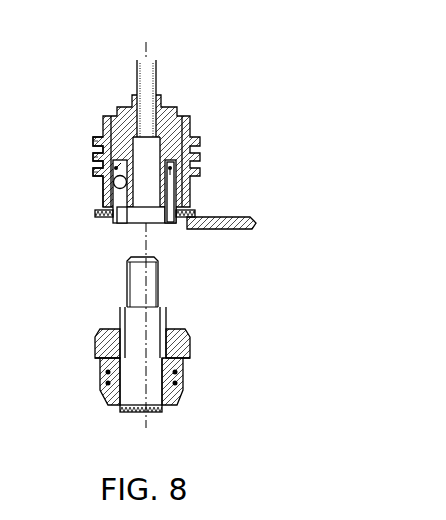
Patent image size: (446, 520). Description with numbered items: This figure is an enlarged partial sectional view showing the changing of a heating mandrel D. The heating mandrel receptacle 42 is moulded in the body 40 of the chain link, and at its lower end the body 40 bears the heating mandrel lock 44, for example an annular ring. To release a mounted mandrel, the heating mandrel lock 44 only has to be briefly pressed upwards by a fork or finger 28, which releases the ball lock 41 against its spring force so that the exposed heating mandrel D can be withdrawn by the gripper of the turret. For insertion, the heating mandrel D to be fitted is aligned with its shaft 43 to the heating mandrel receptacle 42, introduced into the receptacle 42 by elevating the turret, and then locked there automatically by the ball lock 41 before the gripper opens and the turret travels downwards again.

The body of the chain link 40 is at (198, 114).
The ball lock 41 is at (92, 143).
The heating mandrel receptacle 42 is at (147, 185).
The shaft 43 is at (157, 283).
The heating mandrel lock 44 is at (100, 218).
The fork or finger 28 is at (230, 217).
The heating mandrel D is at (209, 378).